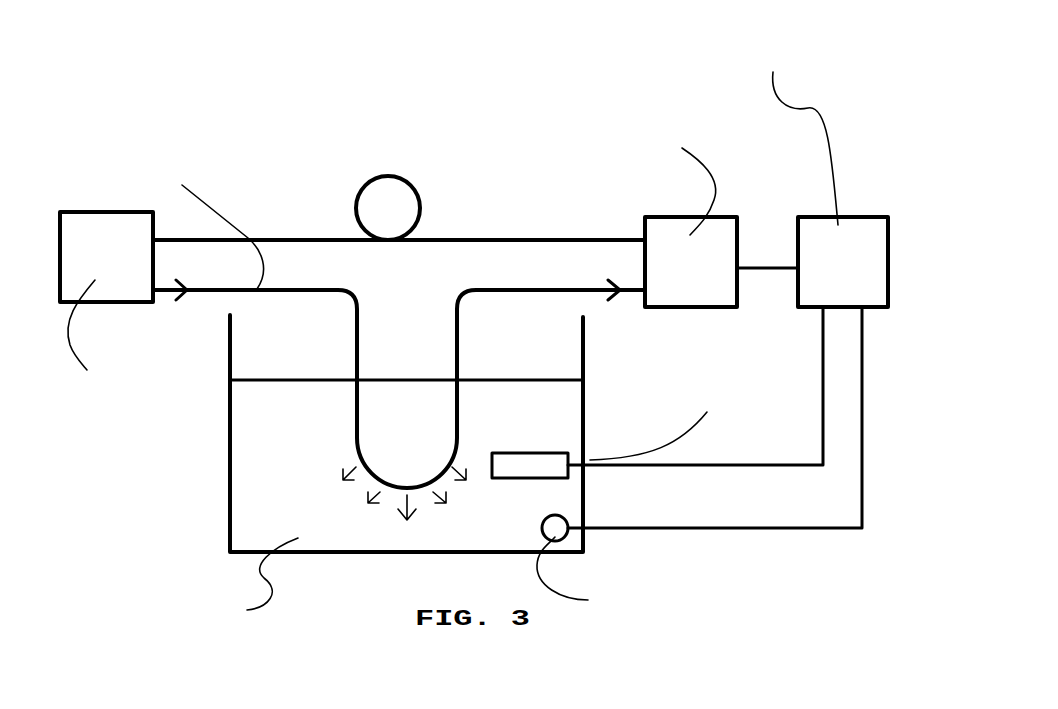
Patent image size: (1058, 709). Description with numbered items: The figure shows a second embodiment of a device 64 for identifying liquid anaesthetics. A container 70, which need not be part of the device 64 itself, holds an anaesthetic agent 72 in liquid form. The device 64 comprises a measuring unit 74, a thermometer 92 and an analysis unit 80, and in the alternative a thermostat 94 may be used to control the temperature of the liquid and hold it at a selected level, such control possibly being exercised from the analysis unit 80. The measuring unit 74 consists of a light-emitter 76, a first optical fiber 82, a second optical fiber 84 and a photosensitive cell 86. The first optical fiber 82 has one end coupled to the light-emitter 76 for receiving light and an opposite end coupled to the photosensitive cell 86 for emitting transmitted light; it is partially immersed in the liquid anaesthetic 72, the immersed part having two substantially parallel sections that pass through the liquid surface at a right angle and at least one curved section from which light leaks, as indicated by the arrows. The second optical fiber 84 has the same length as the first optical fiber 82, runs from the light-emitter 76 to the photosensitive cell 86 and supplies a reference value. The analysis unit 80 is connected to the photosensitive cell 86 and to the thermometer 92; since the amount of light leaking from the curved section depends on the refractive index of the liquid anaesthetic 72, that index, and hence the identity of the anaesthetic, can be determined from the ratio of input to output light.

The device 64 is at (394, 116).
The container 70 is at (583, 355).
The anaesthetic agent 72 is at (243, 464).
The measuring unit 74 is at (257, 190).
The light-emitter 76 is at (112, 325).
The analysis unit 80 is at (800, 157).
The first optical fiber 82 is at (228, 292).
The second optical fiber 84 is at (413, 186).
The photosensitive cell 86 is at (659, 192).
The thermometer 92 is at (567, 522).
The thermostat 94 is at (568, 456).